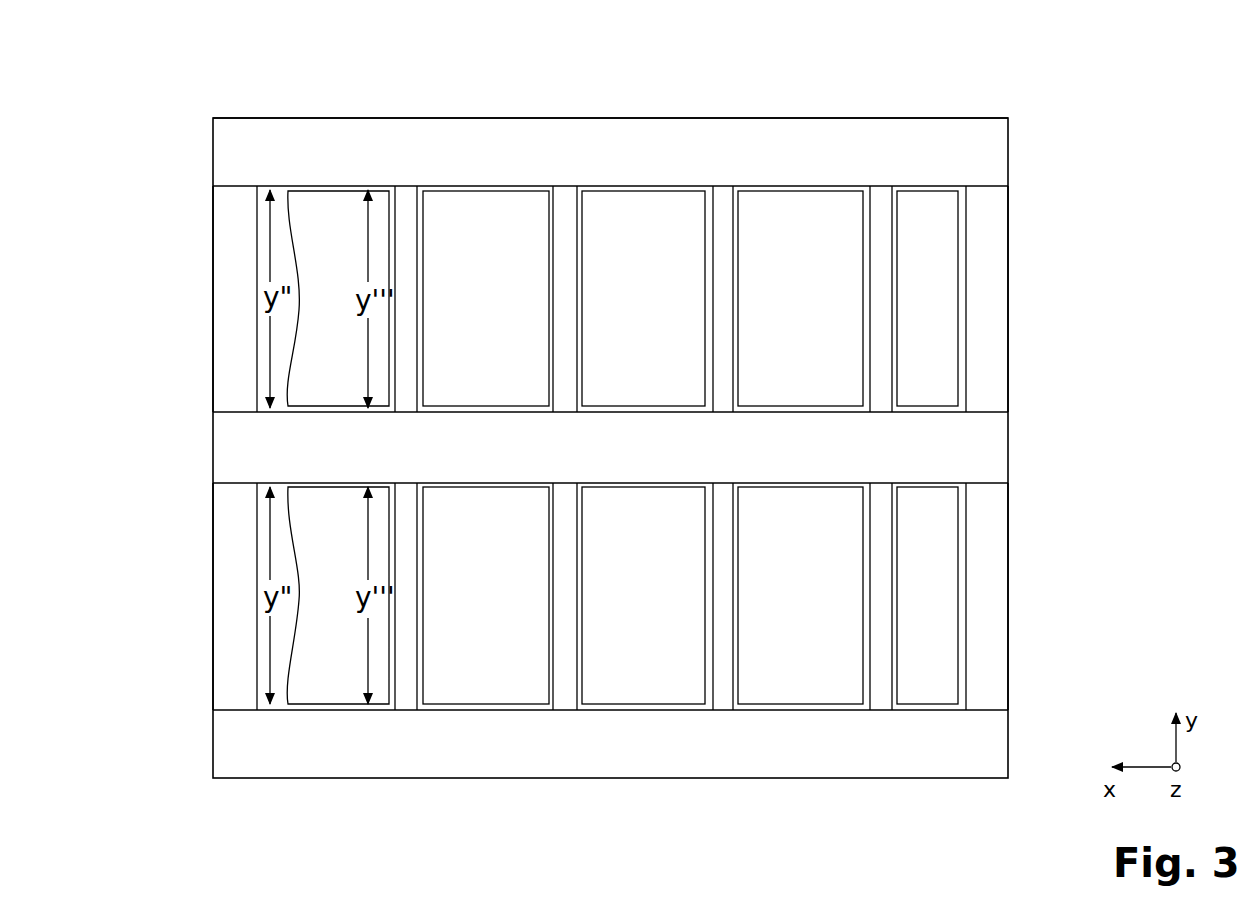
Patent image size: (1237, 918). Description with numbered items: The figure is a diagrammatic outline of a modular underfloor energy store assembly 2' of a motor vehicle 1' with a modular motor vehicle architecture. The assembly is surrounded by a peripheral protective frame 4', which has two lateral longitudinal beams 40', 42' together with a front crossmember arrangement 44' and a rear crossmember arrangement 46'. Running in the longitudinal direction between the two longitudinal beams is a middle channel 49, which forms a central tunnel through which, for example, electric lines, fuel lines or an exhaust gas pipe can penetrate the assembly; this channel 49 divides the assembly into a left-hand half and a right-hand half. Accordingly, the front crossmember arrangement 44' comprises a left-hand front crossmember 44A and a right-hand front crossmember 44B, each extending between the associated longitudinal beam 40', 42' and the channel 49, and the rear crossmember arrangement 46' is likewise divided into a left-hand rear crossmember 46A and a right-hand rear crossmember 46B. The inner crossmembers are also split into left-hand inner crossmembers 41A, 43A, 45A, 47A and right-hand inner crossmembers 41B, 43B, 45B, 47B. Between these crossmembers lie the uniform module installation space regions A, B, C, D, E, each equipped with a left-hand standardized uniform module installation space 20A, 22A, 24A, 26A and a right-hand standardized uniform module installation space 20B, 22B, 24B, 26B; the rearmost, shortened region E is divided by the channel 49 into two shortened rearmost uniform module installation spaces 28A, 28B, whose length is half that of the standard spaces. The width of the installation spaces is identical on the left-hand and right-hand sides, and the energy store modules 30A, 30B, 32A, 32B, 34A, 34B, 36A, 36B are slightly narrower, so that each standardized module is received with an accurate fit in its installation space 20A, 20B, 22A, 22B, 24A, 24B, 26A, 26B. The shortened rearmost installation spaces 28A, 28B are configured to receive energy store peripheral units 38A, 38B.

The motor vehicle 1' is at (719, 448).
The underfloor energy store assembly 2' is at (610, 77).
The peripheral protective frame 4' is at (575, 43).
The left-hand standardized uniform module installation space 20A is at (284, 712).
The right-hand standardized uniform module installation space 20B is at (343, 182).
The left-hand standardized uniform module installation space 22A is at (506, 712).
The right-hand standardized uniform module installation space 22B is at (500, 182).
The left-hand standardized uniform module installation space 24A is at (620, 712).
The right-hand standardized uniform module installation space 24B is at (648, 182).
The left-hand standardized uniform module installation space 26A is at (775, 712).
The right-hand standardized uniform module installation space 26B is at (800, 182).
The shortened rearmost uniform module installation space 28A is at (938, 712).
The shortened rearmost uniform module installation space 28B is at (953, 182).
The energy store module 30A is at (345, 695).
The energy store module 30B is at (322, 210).
The energy store module 32A is at (450, 695).
The energy store module 32B is at (484, 210).
The energy store module 34A is at (663, 695).
The energy store module 34B is at (668, 210).
The energy store module 36A is at (828, 695).
The energy store module 36B is at (812, 210).
The energy store peripheral unit 38A is at (955, 695).
The energy store peripheral unit 38B is at (940, 228).
The lateral longitudinal beam 40' is at (602, 113).
The left-hand inner crossmember 41A is at (403, 695).
The right-hand inner crossmember 41B is at (406, 210).
The lateral longitudinal beam 42' is at (610, 782).
The left-hand inner crossmember 43A is at (565, 695).
The right-hand inner crossmember 43B is at (561, 210).
The front crossmember arrangement 44' is at (157, 344).
The left-hand front crossmember 44A is at (232, 582).
The right-hand front crossmember 44B is at (232, 280).
The left-hand inner crossmember 45A is at (723, 697).
The right-hand inner crossmember 45B is at (728, 210).
The rear crossmember arrangement 46' is at (1061, 329).
The left-hand rear crossmember 46A is at (990, 540).
The right-hand rear crossmember 46B is at (990, 277).
The left-hand inner crossmember 47A is at (887, 695).
The right-hand inner crossmember 47B is at (886, 210).
The middle channel 49 is at (210, 442).
The uniform module installation space region A is at (300, 182).
The uniform module installation space region B is at (468, 182).
The uniform module installation space region C is at (688, 178).
The uniform module installation space region D is at (843, 178).
The uniform module installation space region E is at (930, 182).